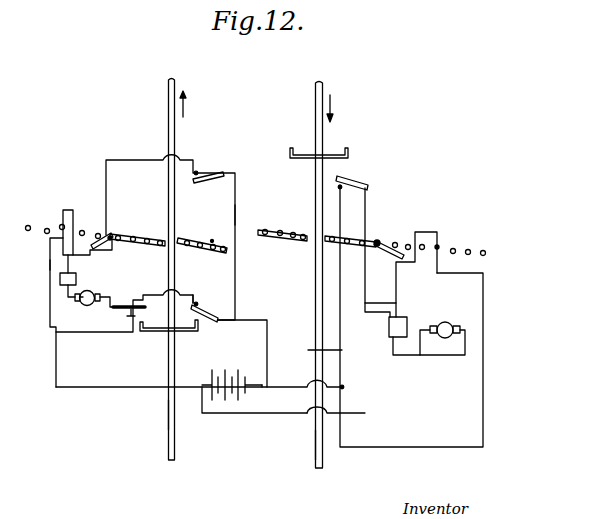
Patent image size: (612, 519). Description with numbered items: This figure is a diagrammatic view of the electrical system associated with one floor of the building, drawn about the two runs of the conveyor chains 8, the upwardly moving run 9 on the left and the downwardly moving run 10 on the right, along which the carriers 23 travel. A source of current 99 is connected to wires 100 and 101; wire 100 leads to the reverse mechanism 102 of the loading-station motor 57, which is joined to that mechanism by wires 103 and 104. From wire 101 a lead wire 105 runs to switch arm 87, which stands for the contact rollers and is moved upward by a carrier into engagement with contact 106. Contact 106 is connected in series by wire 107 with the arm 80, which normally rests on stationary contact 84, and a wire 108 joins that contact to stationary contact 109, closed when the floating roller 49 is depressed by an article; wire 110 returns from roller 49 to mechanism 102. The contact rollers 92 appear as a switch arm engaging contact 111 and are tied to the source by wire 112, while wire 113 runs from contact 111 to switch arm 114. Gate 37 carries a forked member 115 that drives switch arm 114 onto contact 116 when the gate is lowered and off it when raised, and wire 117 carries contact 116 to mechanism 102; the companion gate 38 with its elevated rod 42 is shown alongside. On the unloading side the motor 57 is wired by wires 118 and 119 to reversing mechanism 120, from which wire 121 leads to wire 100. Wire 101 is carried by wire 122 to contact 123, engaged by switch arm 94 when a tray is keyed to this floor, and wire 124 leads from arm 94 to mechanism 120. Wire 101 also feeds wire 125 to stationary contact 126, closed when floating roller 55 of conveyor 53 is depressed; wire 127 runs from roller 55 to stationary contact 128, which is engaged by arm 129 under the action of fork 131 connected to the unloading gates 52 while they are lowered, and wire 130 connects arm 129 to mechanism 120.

The conveyor chains 8 is at (160, 410).
The upwardly moving run 9 is at (165, 445).
The downwardly moving run 10 is at (312, 463).
The carrier 23 is at (348, 153).
The loading gate 37 is at (132, 236).
The loading gate 38 is at (190, 240).
The rod or roller 42 is at (212, 240).
The floating roller 49 is at (61, 225).
The unloading gates 52 is at (286, 231).
The conveyor 53 is at (484, 251).
The floating roller 55 is at (440, 244).
The motor 57 is at (88, 306).
The arm 80 is at (130, 305).
The stationary contact 84 is at (130, 313).
The contact rollers 87 is at (210, 313).
The contact rollers 92 is at (213, 176).
The contact rollers 94 is at (362, 180).
The source of current 99 is at (230, 400).
The wire 100 is at (92, 388).
The wire 101 is at (258, 398).
The reverse mechanism 102 is at (77, 279).
The wire 103 is at (82, 299).
The wire 104 is at (110, 292).
The lead wire 105 is at (268, 335).
The contact 106 is at (200, 303).
The wire 107 is at (190, 300).
The wire 108 is at (93, 334).
The stationary contact 109 is at (59, 231).
The wire 110 is at (69, 210).
The contact 111 is at (198, 171).
The wire 112 is at (237, 213).
The wire 113 is at (127, 159).
The switch arm 114 is at (107, 243).
The forked member 115 is at (110, 233).
The contact 116 is at (96, 248).
The wire 117 is at (50, 265).
The wire 118 is at (412, 357).
The wire 119 is at (437, 355).
The reversing mechanism 120 is at (387, 340).
The wire 121 is at (366, 410).
The wire 122 is at (313, 353).
The contact 123 is at (338, 187).
The wire 124 is at (368, 213).
The wire 125 is at (437, 448).
The stationary contact 126 is at (440, 251).
The wire 127 is at (430, 230).
The stationary contact 128 is at (403, 259).
The arm 129 is at (392, 240).
The wire 130 is at (403, 313).
The fork 131 is at (378, 240).